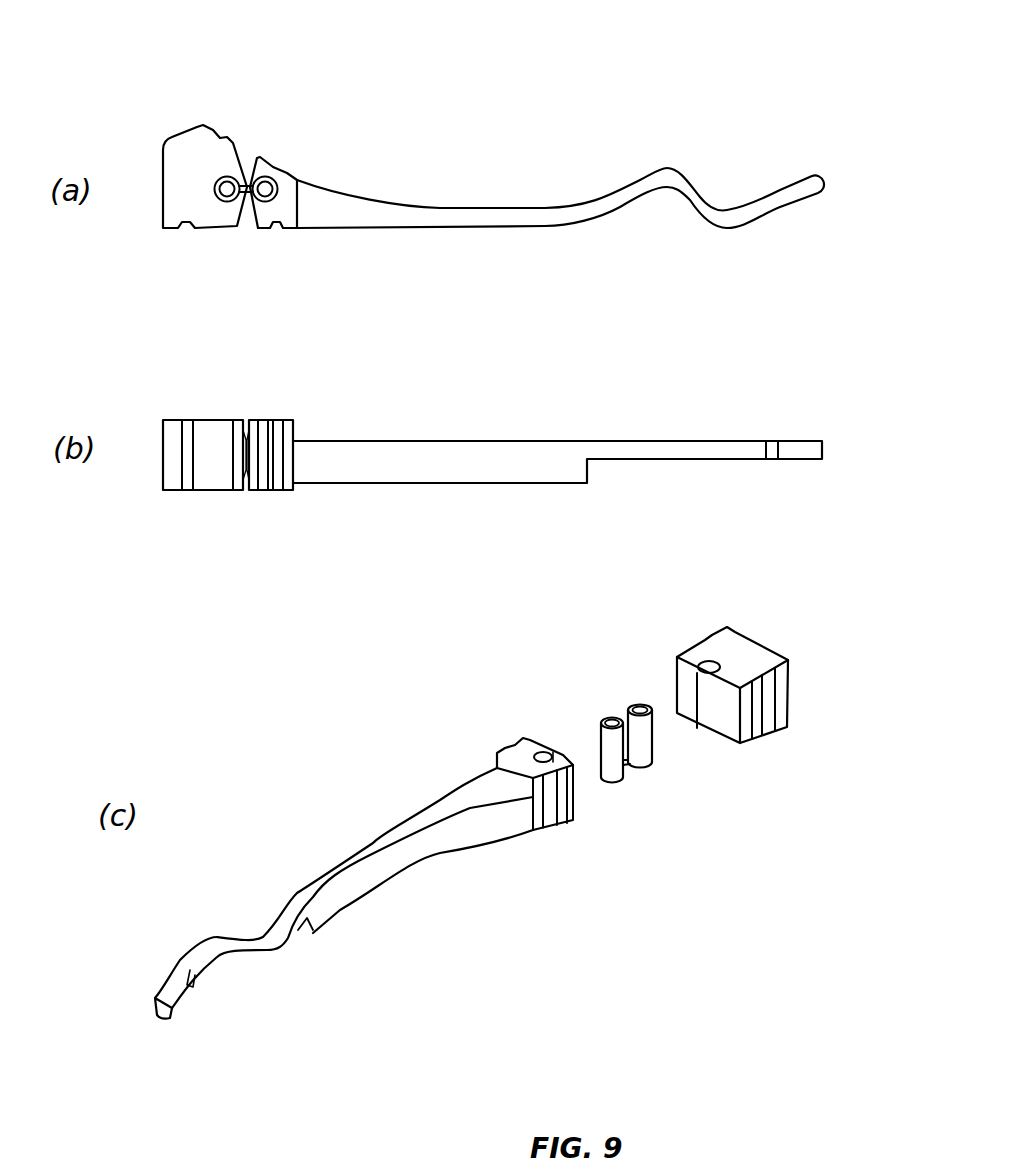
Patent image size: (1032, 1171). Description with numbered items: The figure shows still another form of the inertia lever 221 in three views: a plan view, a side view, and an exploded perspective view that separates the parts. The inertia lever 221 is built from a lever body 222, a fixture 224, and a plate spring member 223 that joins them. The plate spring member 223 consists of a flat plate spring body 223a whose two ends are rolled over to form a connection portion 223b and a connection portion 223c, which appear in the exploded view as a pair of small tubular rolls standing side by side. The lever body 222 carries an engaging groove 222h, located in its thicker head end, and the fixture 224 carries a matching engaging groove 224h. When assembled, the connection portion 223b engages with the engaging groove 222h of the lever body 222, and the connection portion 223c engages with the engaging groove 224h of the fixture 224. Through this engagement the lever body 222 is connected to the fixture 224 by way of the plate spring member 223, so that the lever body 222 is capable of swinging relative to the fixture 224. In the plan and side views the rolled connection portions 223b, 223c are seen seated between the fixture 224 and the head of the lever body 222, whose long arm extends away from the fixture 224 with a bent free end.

The inertia lever 221 is at (386, 169).
The lever body 222 is at (483, 208).
The engaging groove 222h is at (543, 755).
The plate spring member 223 is at (248, 186).
The plate spring body 223a is at (623, 718).
The connection portion 223b is at (612, 778).
The connection portion 223c is at (647, 762).
The fixture 224 is at (203, 125).
The engaging groove 224h is at (707, 662).